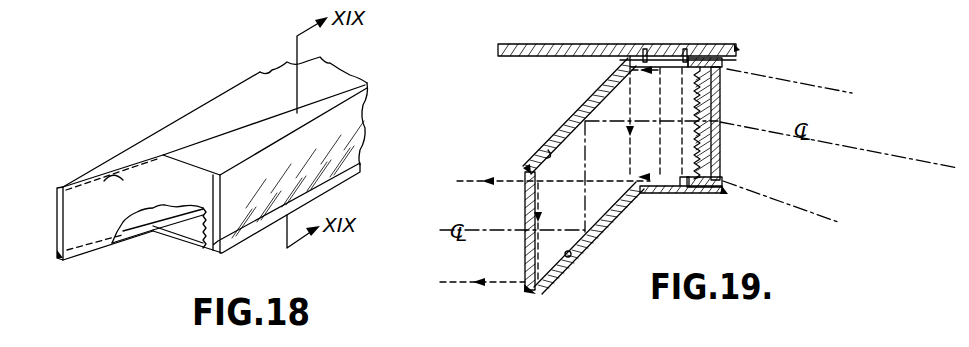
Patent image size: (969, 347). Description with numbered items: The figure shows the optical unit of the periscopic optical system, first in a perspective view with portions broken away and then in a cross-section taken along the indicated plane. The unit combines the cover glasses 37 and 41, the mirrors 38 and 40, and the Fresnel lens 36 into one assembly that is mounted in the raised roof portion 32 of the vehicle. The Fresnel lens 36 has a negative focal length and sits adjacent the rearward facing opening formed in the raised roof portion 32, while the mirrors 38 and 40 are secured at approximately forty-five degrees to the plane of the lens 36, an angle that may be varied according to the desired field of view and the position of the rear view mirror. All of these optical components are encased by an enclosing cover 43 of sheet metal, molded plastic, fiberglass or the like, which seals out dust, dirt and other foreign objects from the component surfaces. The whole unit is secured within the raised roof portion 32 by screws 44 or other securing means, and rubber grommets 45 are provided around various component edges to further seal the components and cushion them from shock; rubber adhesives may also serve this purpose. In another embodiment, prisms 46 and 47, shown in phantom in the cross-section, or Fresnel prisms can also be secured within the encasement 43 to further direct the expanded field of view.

In FIG. 19, the raised roof portion 32 is at (604, 19).
In FIG. 18, the Fresnel lens 36 is at (207, 243).
In FIG. 19, the Fresnel lens 36 is at (712, 153).
In FIG. 18, the cover glass 37 is at (330, 153).
In FIG. 19, the cover glass 37 is at (722, 96).
In FIG. 18, the mirror 38 is at (108, 173).
In FIG. 19, the mirror 38 is at (547, 152).
In FIG. 18, the mirror 40 is at (83, 247).
In FIG. 19, the mirror 40 is at (571, 258).
In FIG. 18, the cover glass 41 is at (58, 205).
In FIG. 19, the cover glass 41 is at (523, 250).
In FIG. 18, the enclosing cover 43 is at (213, 106).
In FIG. 19, the enclosing cover 43 is at (566, 127).
In FIG. 19, the screws 44 is at (643, 50).
In FIG. 19, the rubber grommets 45 is at (736, 50).
In FIG. 19, the prism 46 is at (681, 202).
In FIG. 19, the prism 47 is at (651, 191).